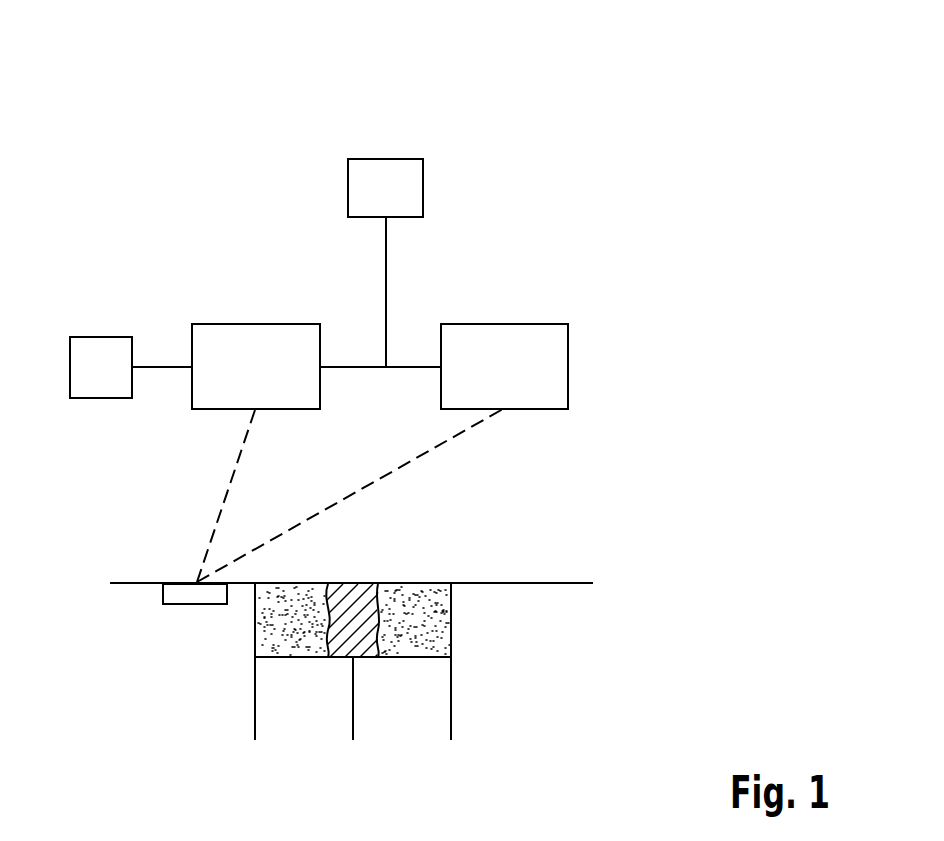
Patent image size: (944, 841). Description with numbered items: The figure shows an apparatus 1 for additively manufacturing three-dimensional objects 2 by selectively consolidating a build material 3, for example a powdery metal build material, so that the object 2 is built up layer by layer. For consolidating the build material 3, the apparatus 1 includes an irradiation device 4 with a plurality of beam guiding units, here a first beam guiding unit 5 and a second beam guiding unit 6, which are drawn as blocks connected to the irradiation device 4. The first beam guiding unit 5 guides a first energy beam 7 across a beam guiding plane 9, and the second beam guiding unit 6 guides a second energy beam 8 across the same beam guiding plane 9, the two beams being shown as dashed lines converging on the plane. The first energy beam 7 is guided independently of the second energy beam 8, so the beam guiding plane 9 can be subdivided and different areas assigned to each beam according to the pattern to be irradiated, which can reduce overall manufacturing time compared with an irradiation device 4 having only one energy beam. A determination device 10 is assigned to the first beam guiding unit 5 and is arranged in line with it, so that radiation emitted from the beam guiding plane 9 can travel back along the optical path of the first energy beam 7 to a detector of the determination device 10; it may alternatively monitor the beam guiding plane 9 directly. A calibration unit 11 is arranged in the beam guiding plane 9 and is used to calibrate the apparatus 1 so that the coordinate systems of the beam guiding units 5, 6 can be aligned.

The apparatus 1 is at (693, 114).
The three-dimensional object 2 is at (352, 597).
The build material 3 is at (432, 627).
The irradiation device 4 is at (318, 186).
The first beam guiding unit 5 is at (253, 312).
The second beam guiding unit 6 is at (588, 288).
The first energy beam 7 is at (220, 510).
The second energy beam 8 is at (387, 477).
The beam guiding plane 9 is at (449, 563).
The determination device 10 is at (103, 337).
The calibration unit 11 is at (193, 605).